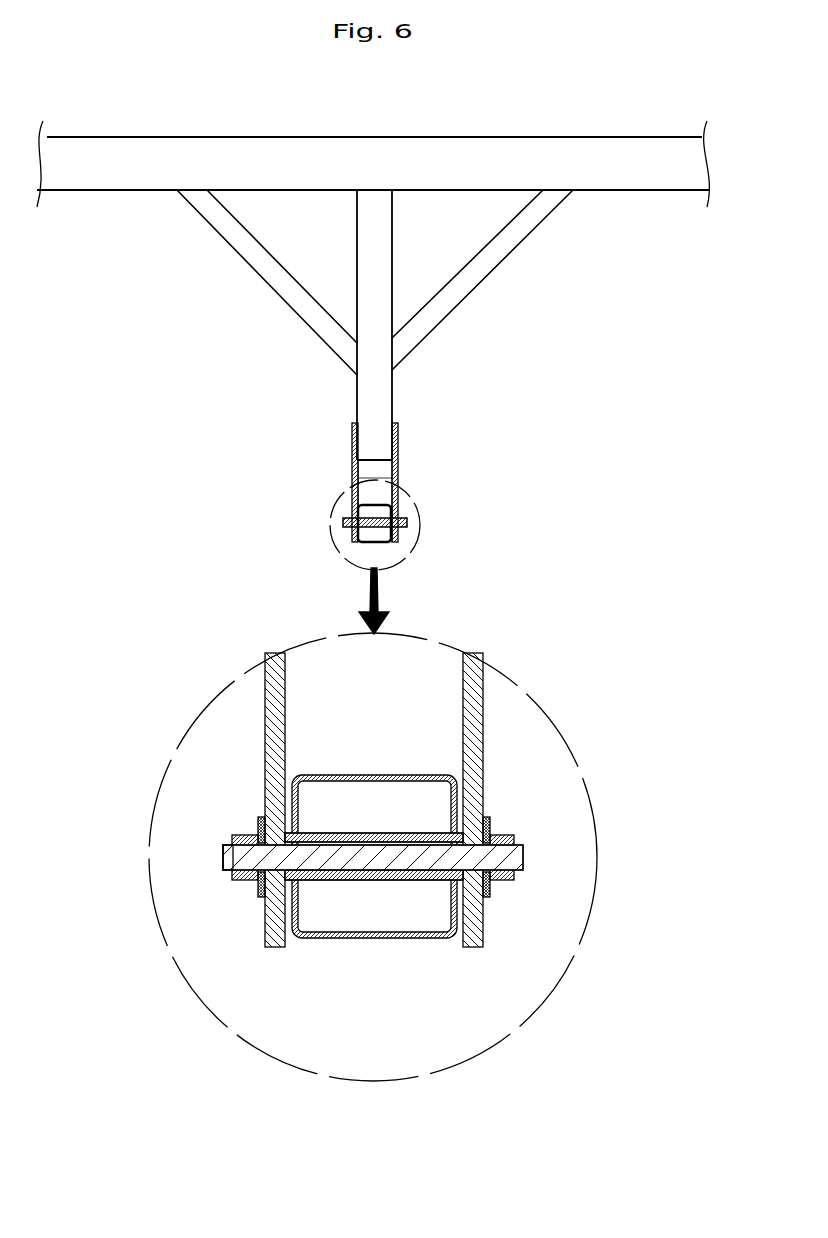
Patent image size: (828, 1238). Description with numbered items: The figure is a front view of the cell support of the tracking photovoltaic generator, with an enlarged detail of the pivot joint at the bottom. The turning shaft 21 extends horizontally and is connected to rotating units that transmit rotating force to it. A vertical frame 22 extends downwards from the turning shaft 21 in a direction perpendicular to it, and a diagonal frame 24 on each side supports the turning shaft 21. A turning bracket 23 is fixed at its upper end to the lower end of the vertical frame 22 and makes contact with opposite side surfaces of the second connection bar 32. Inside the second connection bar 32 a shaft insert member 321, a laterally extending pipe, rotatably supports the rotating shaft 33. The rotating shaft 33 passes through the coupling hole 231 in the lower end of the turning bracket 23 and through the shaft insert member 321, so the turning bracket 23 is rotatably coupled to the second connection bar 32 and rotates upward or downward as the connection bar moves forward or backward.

The turning shaft 21 is at (243, 152).
The vertical frame 22 is at (378, 391).
The turning bracket 23 is at (393, 468).
The diagonal frame 24 is at (260, 260).
The second connection bar 32 is at (425, 773).
The shaft insert member 321 is at (435, 833).
The rotating shaft 33 is at (523, 856).
The coupling hole 231 is at (223, 853).